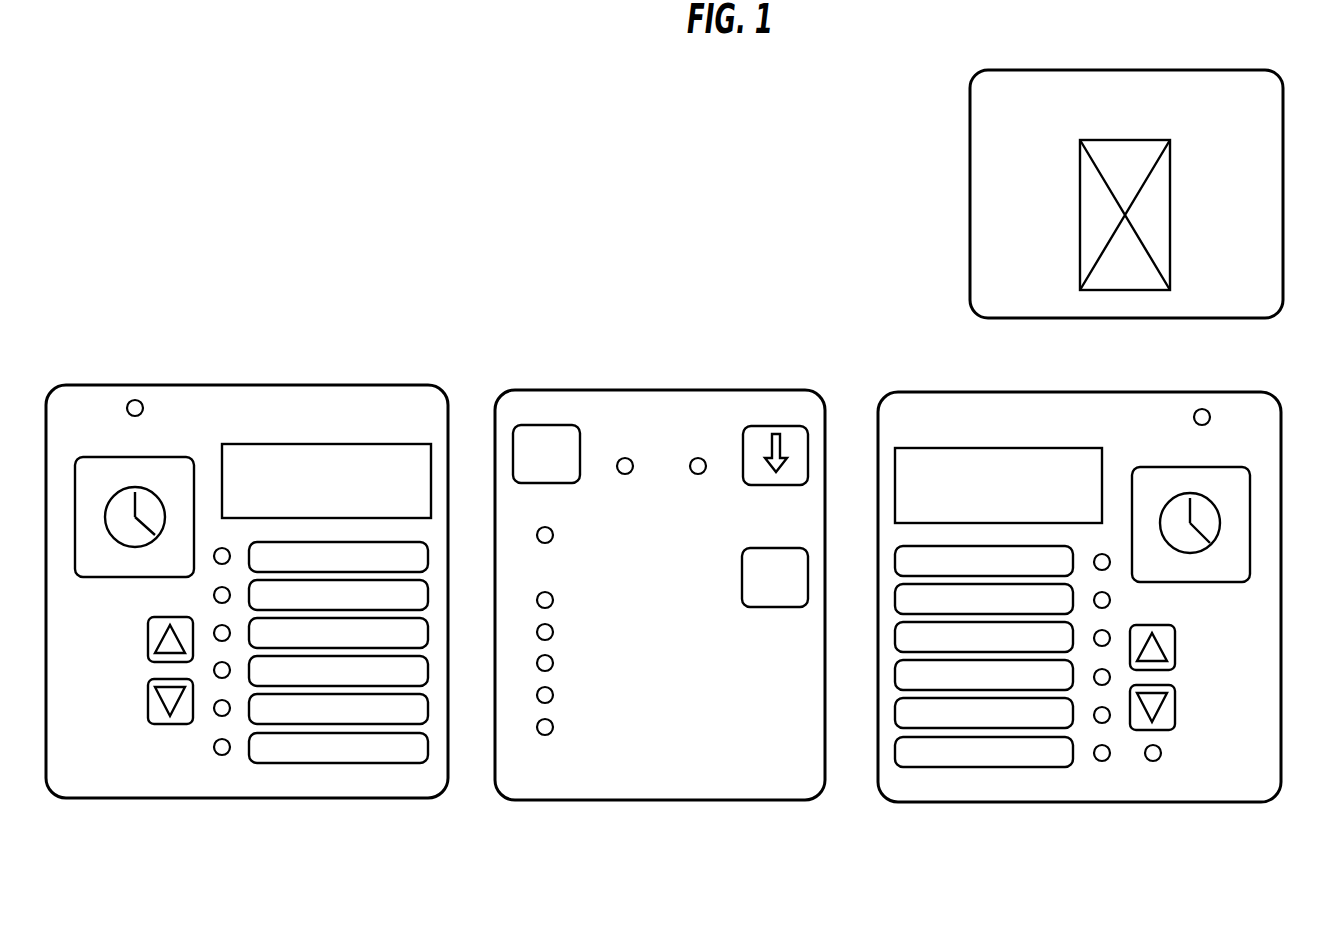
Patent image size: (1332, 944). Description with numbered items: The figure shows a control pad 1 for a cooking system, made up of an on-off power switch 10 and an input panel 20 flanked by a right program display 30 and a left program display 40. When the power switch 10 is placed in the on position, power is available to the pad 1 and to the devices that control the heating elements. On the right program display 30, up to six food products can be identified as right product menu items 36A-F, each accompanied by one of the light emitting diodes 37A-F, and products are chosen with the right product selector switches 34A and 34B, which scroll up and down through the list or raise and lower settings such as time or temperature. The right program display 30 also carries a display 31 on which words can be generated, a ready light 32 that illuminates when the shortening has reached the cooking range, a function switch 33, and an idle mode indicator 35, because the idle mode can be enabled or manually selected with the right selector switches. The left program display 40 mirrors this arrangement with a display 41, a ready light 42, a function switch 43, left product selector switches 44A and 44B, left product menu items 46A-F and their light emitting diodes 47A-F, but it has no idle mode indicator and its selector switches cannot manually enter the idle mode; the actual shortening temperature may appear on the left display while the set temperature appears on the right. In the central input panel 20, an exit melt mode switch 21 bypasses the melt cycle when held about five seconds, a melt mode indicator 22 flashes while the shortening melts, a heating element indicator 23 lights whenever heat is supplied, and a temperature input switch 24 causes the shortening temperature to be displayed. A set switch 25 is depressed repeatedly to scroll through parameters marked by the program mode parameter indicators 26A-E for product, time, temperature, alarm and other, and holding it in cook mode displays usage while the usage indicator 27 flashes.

The control pad 1 is at (933, 227).
The on-off power switch 10 is at (1025, 188).
The input panel 20 is at (688, 801).
The exit melt mode switch 21 is at (537, 423).
The melt mode indicator 22 is at (625, 425).
The heating element indicator 23 is at (700, 425).
The temperature input switch 24 is at (773, 426).
The set switch 25 is at (808, 589).
The program mode parameter indicators 26A-E is at (542, 735).
The usage indicator 27 is at (537, 535).
The right program display 30 is at (993, 392).
The right display 31 is at (1082, 448).
The right shortening temperature indicator 32 is at (1202, 409).
The function switch 33 is at (1228, 583).
The right product selector switch 34A is at (1176, 645).
The right product selector switch 34B is at (1176, 708).
The idle mode indicator 35 is at (1161, 755).
The right product menu items 36A-F is at (955, 767).
The light emitting diodes 37A-F is at (1108, 761).
The left program display 40 is at (333, 385).
The left display 41 is at (246, 444).
The left shortening temperature indicator 42 is at (136, 400).
The function switch 43 is at (100, 577).
The left product selector switch 44A is at (148, 638).
The left product selector switch 44B is at (148, 700).
The left product menu items 46A-F is at (370, 764).
The light emitting diodes 47A-F is at (216, 752).